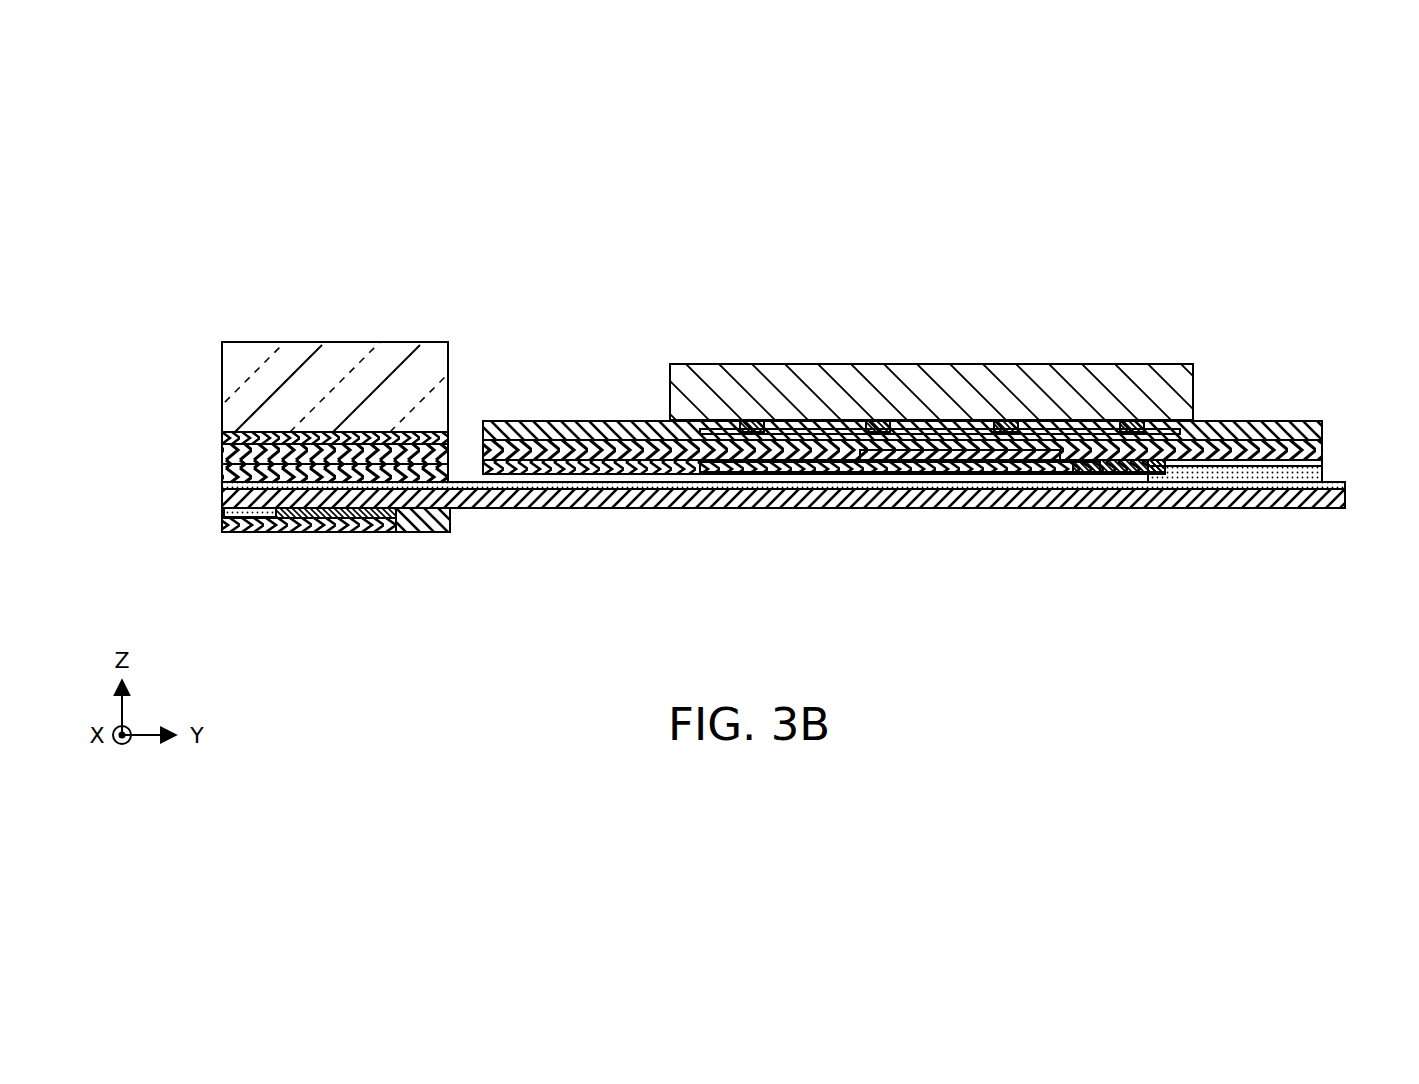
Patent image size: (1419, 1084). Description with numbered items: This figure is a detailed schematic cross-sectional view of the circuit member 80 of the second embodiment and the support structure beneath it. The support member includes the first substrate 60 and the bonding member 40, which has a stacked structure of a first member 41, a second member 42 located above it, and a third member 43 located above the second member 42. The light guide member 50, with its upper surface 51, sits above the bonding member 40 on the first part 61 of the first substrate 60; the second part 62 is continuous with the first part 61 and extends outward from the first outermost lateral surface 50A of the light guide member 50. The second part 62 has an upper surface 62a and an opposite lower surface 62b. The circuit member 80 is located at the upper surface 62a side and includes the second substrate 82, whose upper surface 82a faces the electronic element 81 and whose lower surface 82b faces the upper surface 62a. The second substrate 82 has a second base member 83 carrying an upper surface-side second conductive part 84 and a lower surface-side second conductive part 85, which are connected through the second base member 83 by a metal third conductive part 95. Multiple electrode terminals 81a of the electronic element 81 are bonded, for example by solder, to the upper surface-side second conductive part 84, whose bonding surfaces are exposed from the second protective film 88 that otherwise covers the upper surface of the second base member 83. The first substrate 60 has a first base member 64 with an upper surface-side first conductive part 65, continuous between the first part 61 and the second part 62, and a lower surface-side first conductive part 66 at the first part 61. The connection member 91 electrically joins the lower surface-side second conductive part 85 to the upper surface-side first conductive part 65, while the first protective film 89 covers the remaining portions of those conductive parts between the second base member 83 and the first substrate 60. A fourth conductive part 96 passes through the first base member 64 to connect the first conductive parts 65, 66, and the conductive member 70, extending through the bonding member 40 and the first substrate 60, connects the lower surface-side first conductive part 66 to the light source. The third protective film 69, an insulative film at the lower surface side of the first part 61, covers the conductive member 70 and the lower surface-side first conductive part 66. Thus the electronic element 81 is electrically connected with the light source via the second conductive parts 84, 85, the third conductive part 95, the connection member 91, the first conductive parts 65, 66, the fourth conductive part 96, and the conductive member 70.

The bonding member 40 is at (279, 441).
The first member 41 is at (303, 479).
The second member 42 is at (224, 453).
The third member 43 is at (224, 437).
The light guide member 50 is at (358, 353).
The first outermost lateral surface 50A is at (452, 380).
The upper surface of the light guide member 51 is at (290, 342).
The first substrate 60 is at (736, 529).
The first part 61 is at (336, 562).
The second part 62 is at (571, 456).
The upper surface of the second part 62a is at (515, 440).
The lower surface of the second part 62b is at (510, 472).
The first base member 64 is at (1280, 500).
The upper surface-side first conductive part 65 is at (690, 483).
The lower surface-side first conductive part 66 is at (345, 512).
The third protective film 69 is at (420, 516).
The conductive member 70 is at (245, 512).
The circuit member 80 is at (935, 422).
The electronic element 81 is at (918, 385).
The electrode terminals 81a is at (752, 433).
The second substrate 82 is at (948, 453).
The upper surface of the second substrate 82a is at (632, 438).
The lower surface of the second substrate 82b is at (630, 472).
The second base member 83 is at (948, 456).
The upper surface-side second conductive part 84 is at (800, 435).
The lower surface-side second conductive part 85 is at (1195, 472).
The second protective film 88 is at (586, 428).
The first protective film 89 is at (838, 470).
The connection member 91 is at (1243, 476).
The third conductive part 95 is at (1157, 450).
The fourth conductive part 96 is at (338, 500).